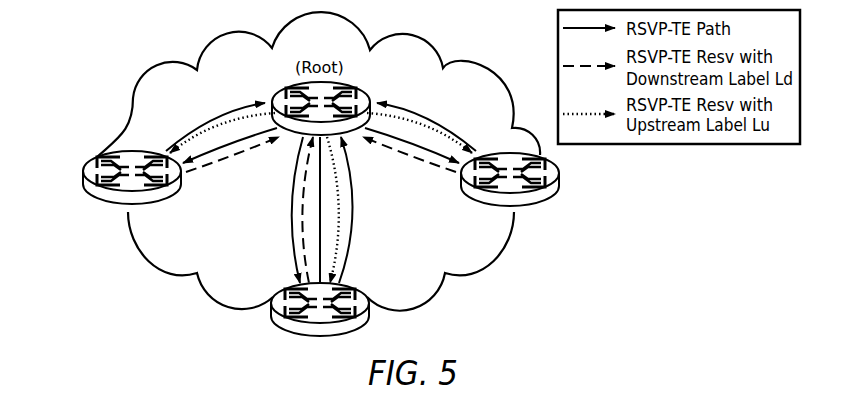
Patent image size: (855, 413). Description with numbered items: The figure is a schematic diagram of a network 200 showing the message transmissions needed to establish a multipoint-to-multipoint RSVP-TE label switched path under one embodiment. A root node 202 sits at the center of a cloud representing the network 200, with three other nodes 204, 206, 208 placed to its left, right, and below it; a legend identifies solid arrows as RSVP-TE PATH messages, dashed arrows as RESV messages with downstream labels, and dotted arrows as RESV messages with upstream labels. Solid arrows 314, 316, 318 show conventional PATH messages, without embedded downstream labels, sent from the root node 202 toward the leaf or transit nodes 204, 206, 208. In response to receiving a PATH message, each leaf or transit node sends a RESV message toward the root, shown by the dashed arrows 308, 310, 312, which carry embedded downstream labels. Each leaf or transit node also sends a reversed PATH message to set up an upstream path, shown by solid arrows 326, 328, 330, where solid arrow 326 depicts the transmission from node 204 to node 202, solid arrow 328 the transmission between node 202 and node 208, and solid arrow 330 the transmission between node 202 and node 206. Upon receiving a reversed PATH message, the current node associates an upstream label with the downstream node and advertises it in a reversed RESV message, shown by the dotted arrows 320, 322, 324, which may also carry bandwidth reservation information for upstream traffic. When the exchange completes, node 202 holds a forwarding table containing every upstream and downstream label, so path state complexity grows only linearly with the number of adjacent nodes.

The network 200 is at (473, 63).
The node 202 is at (348, 83).
The node 204 is at (83, 178).
The node 206 is at (560, 178).
The node 208 is at (367, 325).
The dashed arrow 308 is at (204, 170).
The dashed arrow 310 is at (296, 250).
The dashed arrow 312 is at (408, 148).
The solid arrow 314 is at (233, 153).
The solid arrow 316 is at (291, 224).
The solid arrow 318 is at (433, 172).
The dotted arrow 320 is at (243, 112).
The dotted arrow 322 is at (350, 250).
The dotted arrow 324 is at (398, 112).
The solid arrow 326 is at (190, 125).
The solid arrow 328 is at (351, 223).
The solid arrow 330 is at (452, 128).